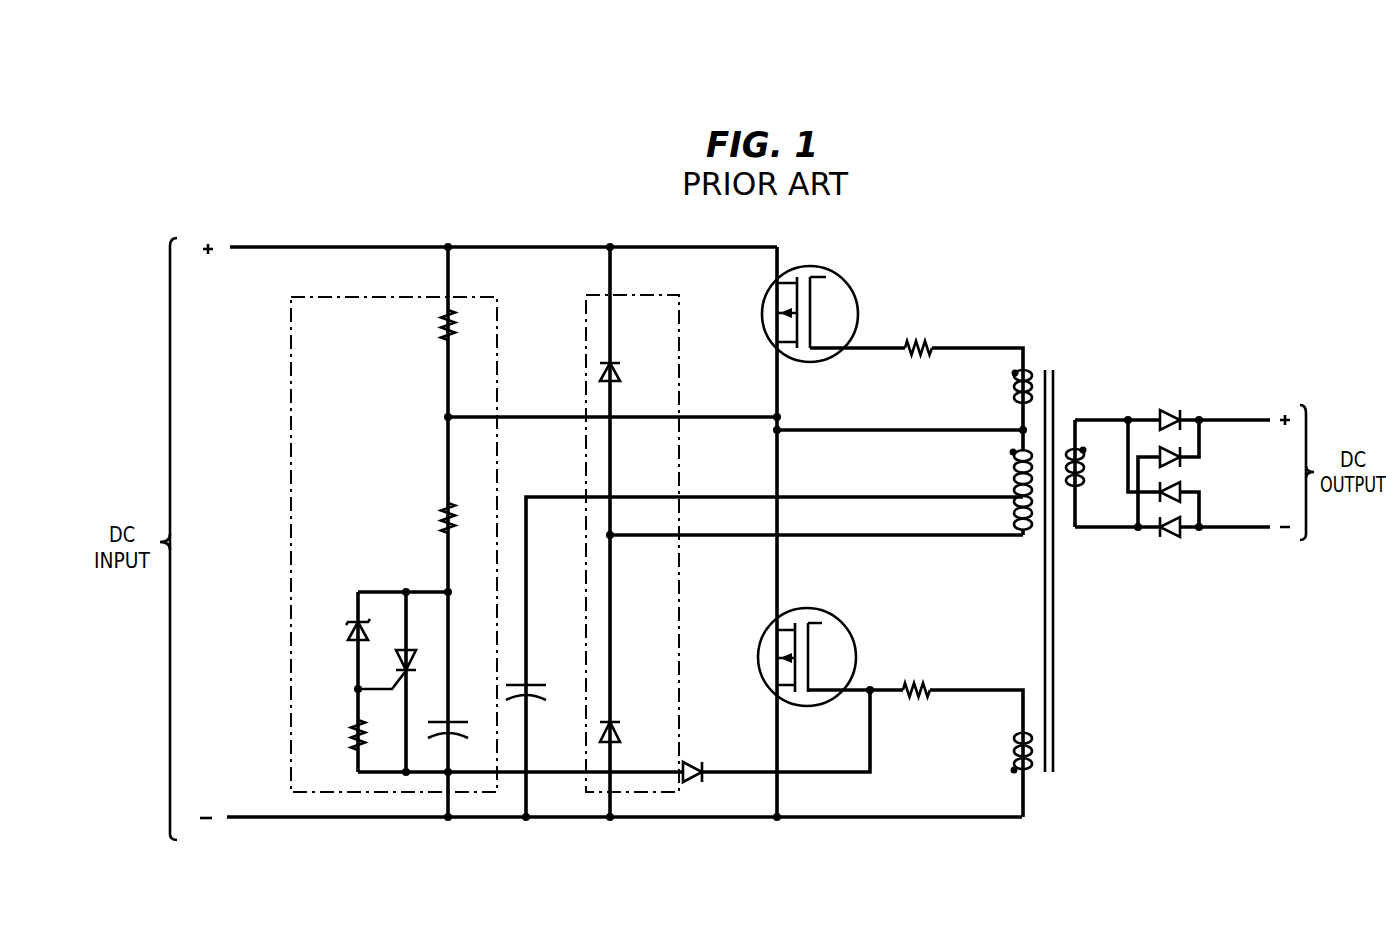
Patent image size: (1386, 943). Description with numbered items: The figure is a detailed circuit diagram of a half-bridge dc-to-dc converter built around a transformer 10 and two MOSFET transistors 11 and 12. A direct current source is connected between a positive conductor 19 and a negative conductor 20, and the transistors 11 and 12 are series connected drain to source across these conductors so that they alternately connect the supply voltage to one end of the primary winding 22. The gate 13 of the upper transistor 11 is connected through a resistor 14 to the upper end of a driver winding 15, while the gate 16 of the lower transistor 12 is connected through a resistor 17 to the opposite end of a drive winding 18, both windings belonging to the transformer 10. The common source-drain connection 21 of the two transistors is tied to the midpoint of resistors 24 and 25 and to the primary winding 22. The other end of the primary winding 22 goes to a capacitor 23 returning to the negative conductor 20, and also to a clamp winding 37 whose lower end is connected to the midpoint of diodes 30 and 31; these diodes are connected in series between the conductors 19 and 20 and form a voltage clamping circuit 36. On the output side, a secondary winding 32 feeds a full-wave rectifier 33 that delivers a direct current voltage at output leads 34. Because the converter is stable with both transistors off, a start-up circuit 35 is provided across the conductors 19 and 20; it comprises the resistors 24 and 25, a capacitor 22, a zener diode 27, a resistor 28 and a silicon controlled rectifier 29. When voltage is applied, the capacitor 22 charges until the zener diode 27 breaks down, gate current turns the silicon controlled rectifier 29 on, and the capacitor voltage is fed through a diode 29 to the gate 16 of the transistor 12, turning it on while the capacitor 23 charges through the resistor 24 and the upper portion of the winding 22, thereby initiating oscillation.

The transformer 10 is at (1022, 319).
The MOSFET transistor 11 is at (848, 280).
The MOSFET transistor 12 is at (842, 626).
The gate 13 is at (846, 356).
The resistor 14 is at (916, 340).
The driver winding 15 is at (1015, 389).
The gate 16 is at (839, 700).
The resistor 17 is at (911, 702).
The drive winding 18 is at (1008, 771).
The conductor 19 is at (270, 251).
The conductor 20 is at (304, 821).
The common source-drain connection 21 is at (779, 550).
The primary winding 22 is at (458, 720).
The capacitor 23 is at (548, 692).
The resistor 24 is at (458, 326).
The resistor 25 is at (458, 518).
The zener diode 27 is at (347, 631).
The resistor 28 is at (347, 740).
The silicon controlled rectifier 29 is at (412, 658).
The diode 30 is at (622, 370).
The diode 31 is at (626, 736).
The secondary winding 32 is at (1086, 484).
The full-wave rectifier 33 is at (1174, 401).
The output leads 34 is at (1246, 424).
The start-up circuit 35 is at (374, 296).
The voltage clamping circuit 36 is at (595, 294).
The clamp winding 37 is at (1010, 511).